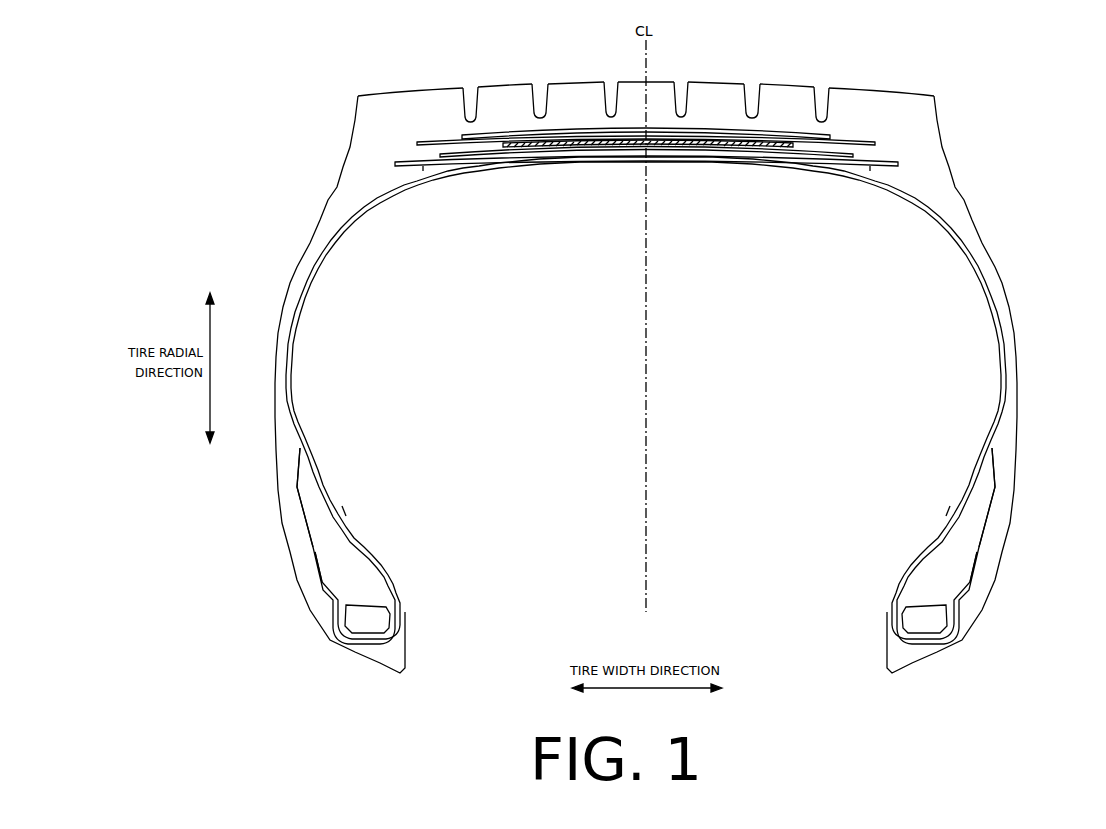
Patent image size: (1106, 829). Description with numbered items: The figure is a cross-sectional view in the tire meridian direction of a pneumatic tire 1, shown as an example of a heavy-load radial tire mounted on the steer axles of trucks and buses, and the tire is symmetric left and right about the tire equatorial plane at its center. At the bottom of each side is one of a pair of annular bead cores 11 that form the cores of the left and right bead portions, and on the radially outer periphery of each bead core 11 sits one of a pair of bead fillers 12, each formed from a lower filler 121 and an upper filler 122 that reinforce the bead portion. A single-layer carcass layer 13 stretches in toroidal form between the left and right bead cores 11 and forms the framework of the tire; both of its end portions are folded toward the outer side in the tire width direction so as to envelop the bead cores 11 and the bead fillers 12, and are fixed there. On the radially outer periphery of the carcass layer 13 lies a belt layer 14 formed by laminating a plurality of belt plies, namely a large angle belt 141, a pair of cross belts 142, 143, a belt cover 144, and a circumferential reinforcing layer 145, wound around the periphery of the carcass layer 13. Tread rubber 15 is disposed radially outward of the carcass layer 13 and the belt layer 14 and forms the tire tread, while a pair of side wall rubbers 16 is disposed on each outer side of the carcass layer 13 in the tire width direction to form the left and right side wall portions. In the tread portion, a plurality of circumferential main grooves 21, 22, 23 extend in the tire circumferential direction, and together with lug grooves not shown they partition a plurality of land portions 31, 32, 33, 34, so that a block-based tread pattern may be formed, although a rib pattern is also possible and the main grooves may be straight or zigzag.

The pneumatic tire 1 is at (990, 81).
The bead core 11 is at (360, 615).
The bead filler 12 is at (229, 527).
The lower filler 121 is at (360, 569).
The upper filler 122 is at (323, 536).
The carcass layer 13 is at (930, 214).
The belt layer 14 is at (885, 228).
The large angle belt 141 is at (857, 167).
The cross belt 142 is at (823, 160).
The cross belt 143 is at (778, 152).
The belt cover 144 is at (747, 145).
The circumferential reinforcing layer 145 is at (705, 147).
The tread rubber 15 is at (778, 82).
The side wall rubber 16 is at (327, 200).
The circumferential main groove 21 is at (612, 96).
The circumferential main groove 22 is at (540, 96).
The circumferential main groove 23 is at (470, 96).
The land portion 31 is at (672, 82).
The land portion 32 is at (575, 84).
The land portion 33 is at (504, 86).
The land portion 34 is at (413, 91).